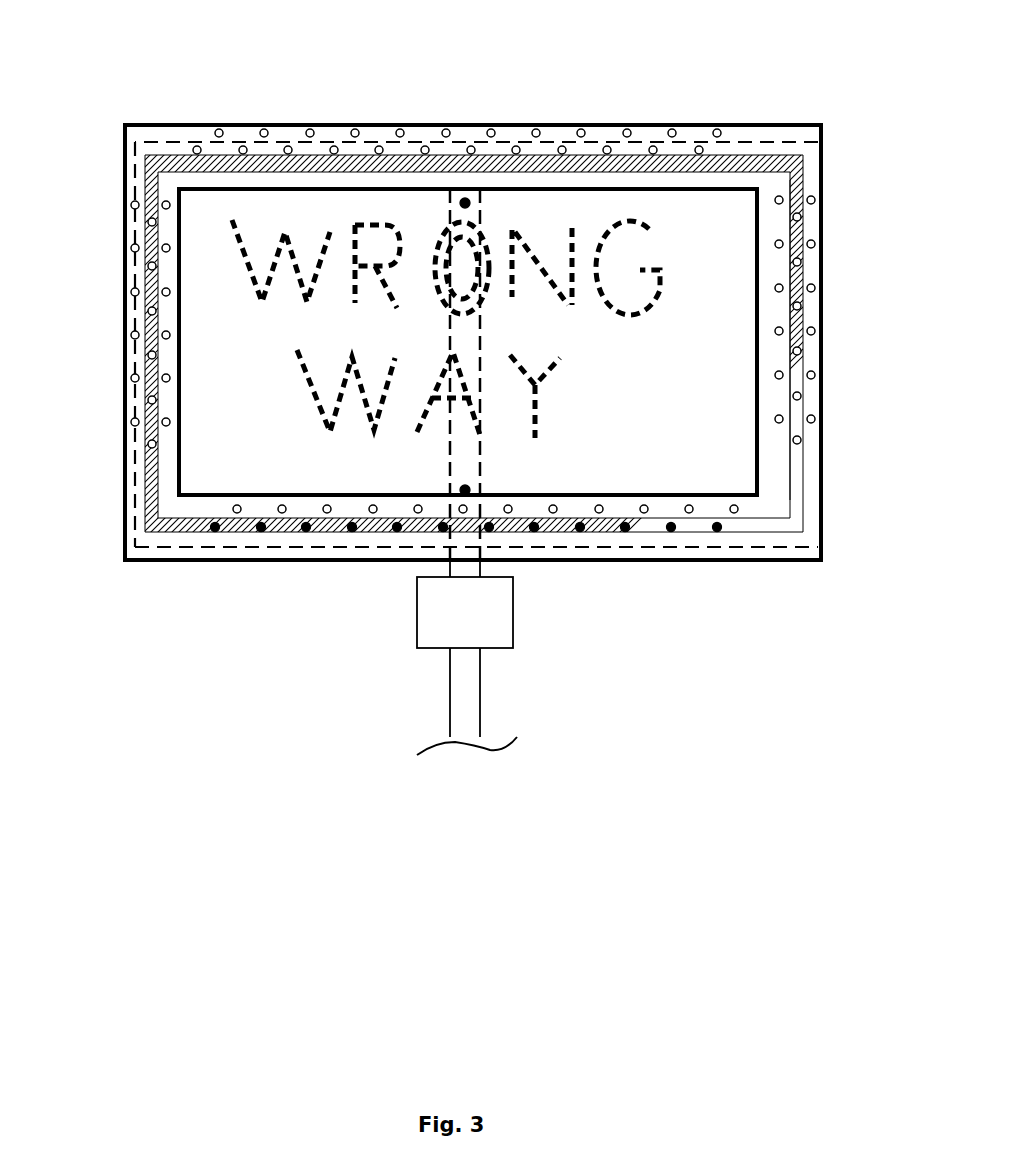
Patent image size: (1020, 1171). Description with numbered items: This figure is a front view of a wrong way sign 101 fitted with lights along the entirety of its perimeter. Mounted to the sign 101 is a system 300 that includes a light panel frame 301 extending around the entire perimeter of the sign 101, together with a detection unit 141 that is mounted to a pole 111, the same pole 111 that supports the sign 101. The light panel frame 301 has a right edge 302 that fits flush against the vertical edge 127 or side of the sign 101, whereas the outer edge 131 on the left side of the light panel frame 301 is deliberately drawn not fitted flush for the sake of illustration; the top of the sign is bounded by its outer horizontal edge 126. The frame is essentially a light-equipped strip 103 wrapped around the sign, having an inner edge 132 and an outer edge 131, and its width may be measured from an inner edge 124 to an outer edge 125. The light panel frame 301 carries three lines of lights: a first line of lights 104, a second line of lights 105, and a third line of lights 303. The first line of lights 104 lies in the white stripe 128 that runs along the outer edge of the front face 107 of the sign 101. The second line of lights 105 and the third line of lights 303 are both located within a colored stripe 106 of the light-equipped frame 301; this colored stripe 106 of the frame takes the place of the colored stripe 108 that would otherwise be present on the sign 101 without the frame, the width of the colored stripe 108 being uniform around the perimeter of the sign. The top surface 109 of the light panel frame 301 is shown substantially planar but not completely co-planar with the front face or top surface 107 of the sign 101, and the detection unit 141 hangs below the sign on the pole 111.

The system 300 is at (547, 86).
The light panel frame 301 is at (143, 122).
The right edge 302 is at (834, 395).
The third line of lights 303 is at (167, 380).
The sign 101 is at (741, 222).
The light-equipped strip 103 is at (133, 365).
The first line of lights 104 is at (130, 420).
The second line of lights 105 is at (155, 445).
The colored stripe 106 is at (789, 345).
The front face 107 is at (598, 456).
The colored stripe 108 is at (468, 104).
The top surface 109 is at (772, 258).
The pole 111 is at (468, 707).
The inner edge 124 is at (753, 117).
The outer edge 125 is at (824, 117).
The outer horizontal edge 126 is at (236, 136).
The vertical edge 127 is at (124, 514).
The white stripe 128 is at (467, 132).
The outer edge 131 is at (119, 213).
The inner edge 132 is at (184, 213).
The detection unit 141 is at (506, 639).